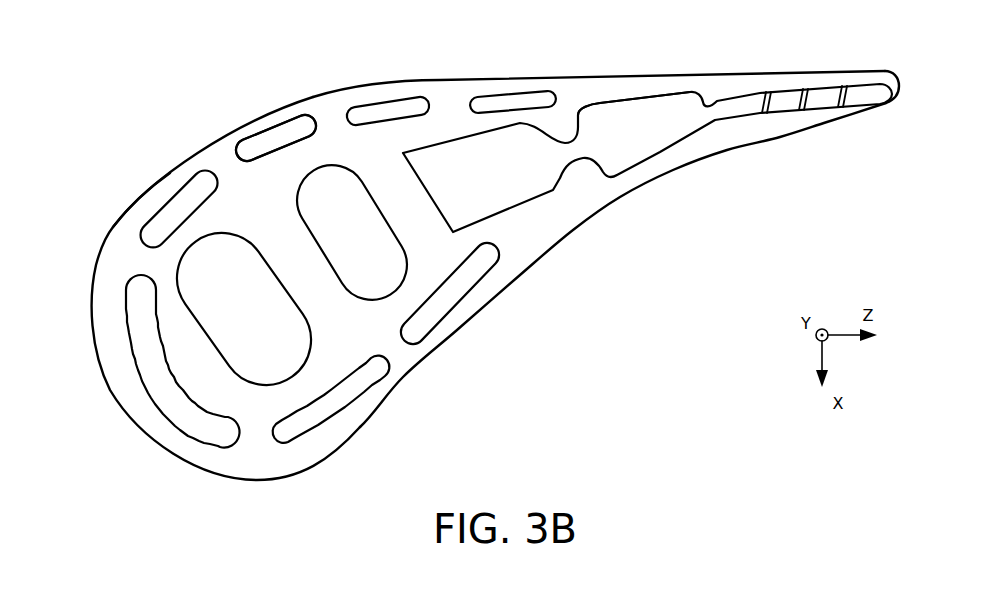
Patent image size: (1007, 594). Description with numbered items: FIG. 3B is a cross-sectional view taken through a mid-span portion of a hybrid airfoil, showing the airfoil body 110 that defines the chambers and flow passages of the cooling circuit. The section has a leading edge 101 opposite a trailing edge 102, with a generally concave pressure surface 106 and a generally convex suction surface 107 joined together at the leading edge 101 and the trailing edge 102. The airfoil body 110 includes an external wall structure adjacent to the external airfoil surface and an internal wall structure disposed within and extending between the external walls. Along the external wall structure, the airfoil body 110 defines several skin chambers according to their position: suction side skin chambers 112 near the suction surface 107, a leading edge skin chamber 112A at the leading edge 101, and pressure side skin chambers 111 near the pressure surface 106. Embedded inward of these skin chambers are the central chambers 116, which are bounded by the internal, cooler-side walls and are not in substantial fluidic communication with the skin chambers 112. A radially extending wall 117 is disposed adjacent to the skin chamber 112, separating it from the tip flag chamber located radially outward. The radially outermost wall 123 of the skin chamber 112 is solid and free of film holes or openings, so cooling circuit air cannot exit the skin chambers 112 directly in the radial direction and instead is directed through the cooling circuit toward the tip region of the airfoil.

The leading edge 101 is at (117, 397).
The trailing edge 102 is at (900, 82).
The pressure surface 106 is at (563, 240).
The suction surface 107 is at (512, 77).
The airfoil body 110 is at (590, 90).
The pressure side skin chambers 111 is at (318, 421).
The suction side skin chambers 112 is at (500, 107).
The leading edge skin chamber 112A is at (177, 407).
The central chambers 116 is at (233, 324).
The radially extending wall 117 is at (292, 145).
The radially outermost wall 123 is at (143, 230).